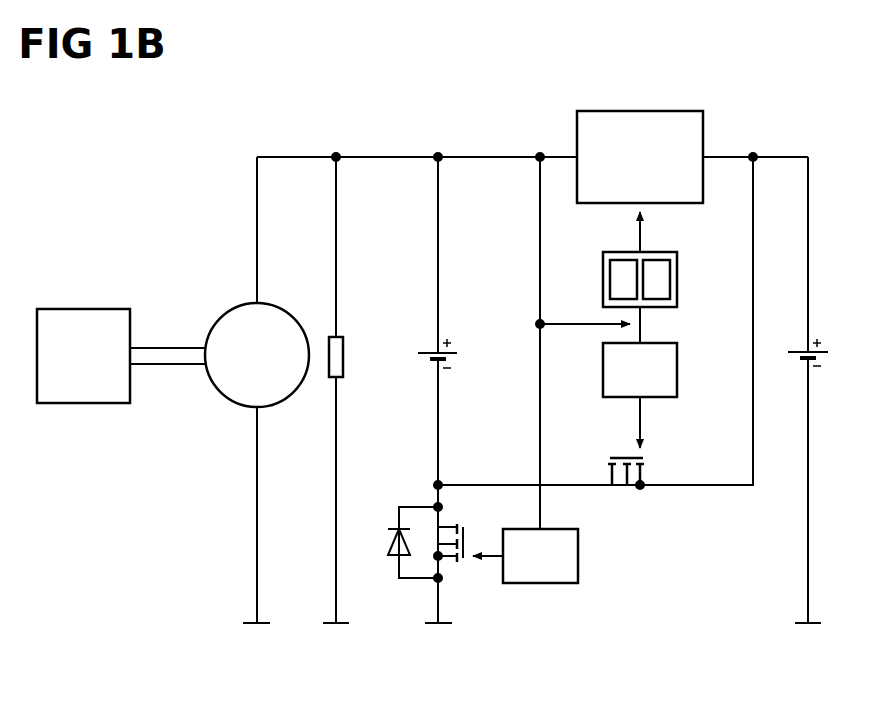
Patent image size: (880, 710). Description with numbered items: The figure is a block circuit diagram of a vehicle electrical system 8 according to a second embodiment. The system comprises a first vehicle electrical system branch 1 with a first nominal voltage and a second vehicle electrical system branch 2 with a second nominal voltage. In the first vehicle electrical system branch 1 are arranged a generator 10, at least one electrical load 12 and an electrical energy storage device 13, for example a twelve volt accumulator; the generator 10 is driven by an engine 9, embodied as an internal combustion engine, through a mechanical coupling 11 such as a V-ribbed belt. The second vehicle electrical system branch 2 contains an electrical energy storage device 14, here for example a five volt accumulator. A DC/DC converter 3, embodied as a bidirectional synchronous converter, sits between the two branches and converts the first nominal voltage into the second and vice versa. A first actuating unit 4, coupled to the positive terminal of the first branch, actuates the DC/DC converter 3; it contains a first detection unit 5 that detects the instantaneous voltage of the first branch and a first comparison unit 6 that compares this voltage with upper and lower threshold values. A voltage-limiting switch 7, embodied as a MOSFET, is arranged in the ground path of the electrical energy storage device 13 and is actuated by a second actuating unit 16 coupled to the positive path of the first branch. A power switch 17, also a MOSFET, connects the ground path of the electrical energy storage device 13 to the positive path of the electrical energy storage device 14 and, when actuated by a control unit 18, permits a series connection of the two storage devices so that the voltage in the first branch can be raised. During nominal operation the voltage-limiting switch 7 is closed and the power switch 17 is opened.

The first vehicle electrical system branch 1 is at (474, 122).
The second vehicle electrical system branch 2 is at (767, 118).
The DC/DC converter 3 is at (641, 111).
The first actuating unit 4 is at (603, 298).
The first detection unit 5 is at (610, 280).
The first comparison unit 6 is at (670, 280).
The voltage-limiting switch 7 is at (476, 598).
The vehicle electrical system 8 is at (176, 148).
The engine 9 is at (84, 318).
The generator 10 is at (228, 323).
The mechanical coupling 11 is at (175, 355).
The electrical load 12 is at (345, 358).
The electrical energy storage device 13 is at (430, 352).
The electrical energy storage device 14 is at (800, 350).
The second actuating unit 16 is at (580, 557).
The power switch 17 is at (628, 458).
The control unit 18 is at (678, 370).